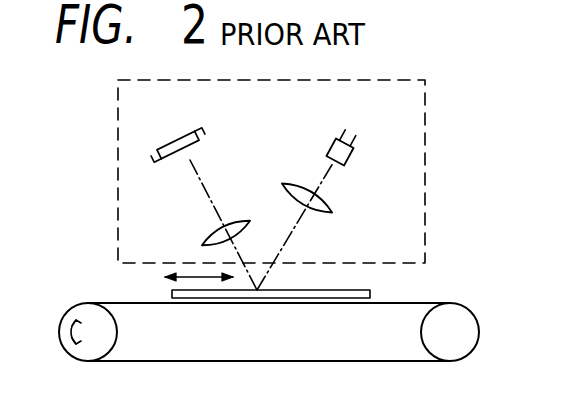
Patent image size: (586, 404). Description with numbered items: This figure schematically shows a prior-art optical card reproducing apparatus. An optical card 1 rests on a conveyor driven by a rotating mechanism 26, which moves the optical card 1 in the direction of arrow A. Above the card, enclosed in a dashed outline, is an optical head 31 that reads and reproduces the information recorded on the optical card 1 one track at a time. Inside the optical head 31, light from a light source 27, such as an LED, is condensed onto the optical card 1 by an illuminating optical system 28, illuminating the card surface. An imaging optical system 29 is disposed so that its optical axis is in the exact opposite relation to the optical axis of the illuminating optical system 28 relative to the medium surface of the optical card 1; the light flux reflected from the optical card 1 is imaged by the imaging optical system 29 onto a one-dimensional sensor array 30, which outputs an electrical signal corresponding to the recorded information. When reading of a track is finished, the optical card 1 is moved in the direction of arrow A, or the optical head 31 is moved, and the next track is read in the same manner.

The optical card 1 is at (370, 290).
The rotating mechanism 26 is at (87, 312).
The light source 27 is at (356, 162).
The illuminating optical system 28 is at (335, 206).
The imaging optical system 29 is at (236, 220).
The one-dimensional sensor array 30 is at (165, 134).
The optical head 31 is at (430, 200).
The direction of arrow A is at (188, 277).